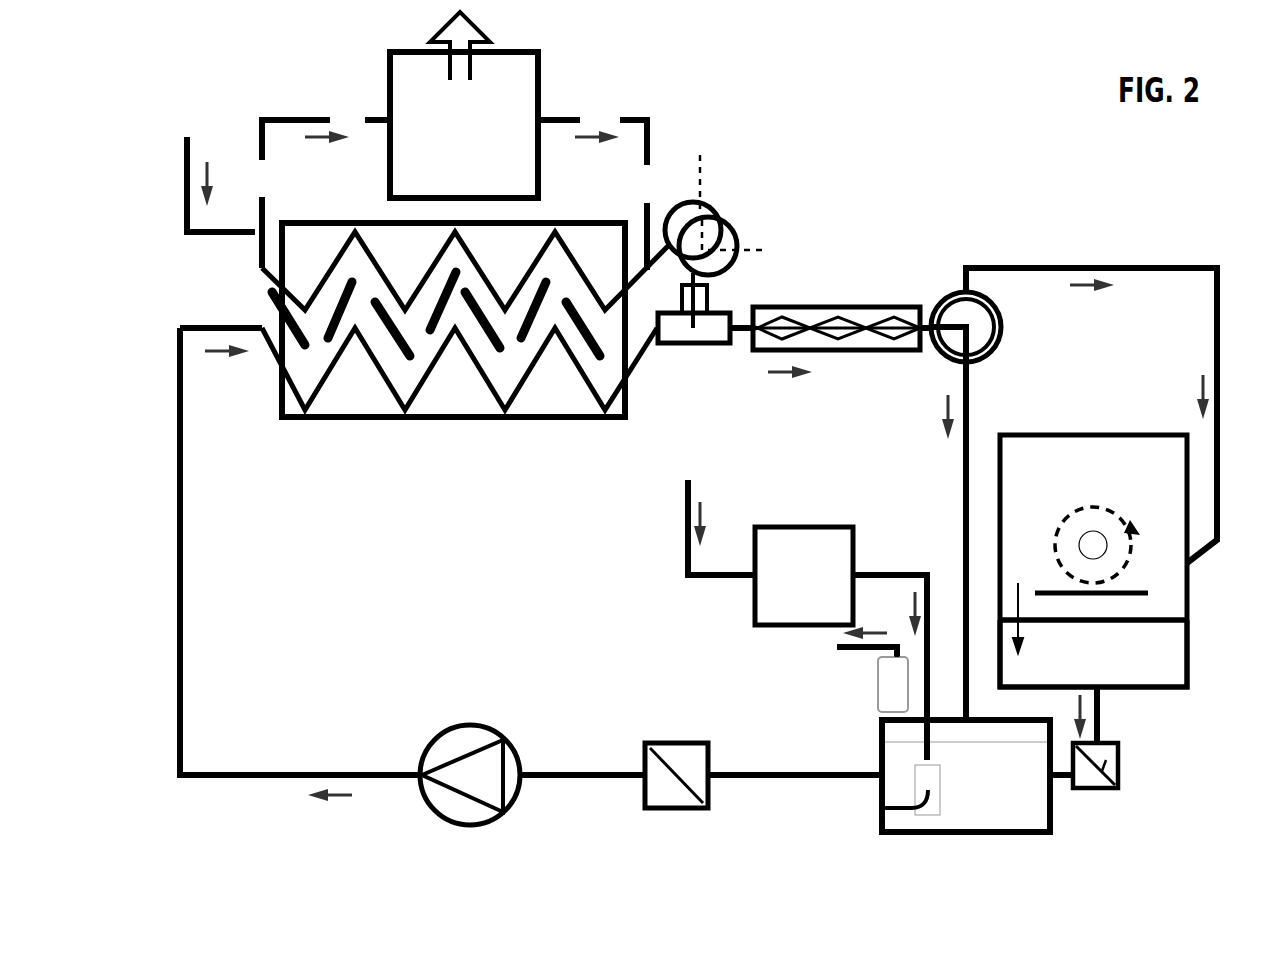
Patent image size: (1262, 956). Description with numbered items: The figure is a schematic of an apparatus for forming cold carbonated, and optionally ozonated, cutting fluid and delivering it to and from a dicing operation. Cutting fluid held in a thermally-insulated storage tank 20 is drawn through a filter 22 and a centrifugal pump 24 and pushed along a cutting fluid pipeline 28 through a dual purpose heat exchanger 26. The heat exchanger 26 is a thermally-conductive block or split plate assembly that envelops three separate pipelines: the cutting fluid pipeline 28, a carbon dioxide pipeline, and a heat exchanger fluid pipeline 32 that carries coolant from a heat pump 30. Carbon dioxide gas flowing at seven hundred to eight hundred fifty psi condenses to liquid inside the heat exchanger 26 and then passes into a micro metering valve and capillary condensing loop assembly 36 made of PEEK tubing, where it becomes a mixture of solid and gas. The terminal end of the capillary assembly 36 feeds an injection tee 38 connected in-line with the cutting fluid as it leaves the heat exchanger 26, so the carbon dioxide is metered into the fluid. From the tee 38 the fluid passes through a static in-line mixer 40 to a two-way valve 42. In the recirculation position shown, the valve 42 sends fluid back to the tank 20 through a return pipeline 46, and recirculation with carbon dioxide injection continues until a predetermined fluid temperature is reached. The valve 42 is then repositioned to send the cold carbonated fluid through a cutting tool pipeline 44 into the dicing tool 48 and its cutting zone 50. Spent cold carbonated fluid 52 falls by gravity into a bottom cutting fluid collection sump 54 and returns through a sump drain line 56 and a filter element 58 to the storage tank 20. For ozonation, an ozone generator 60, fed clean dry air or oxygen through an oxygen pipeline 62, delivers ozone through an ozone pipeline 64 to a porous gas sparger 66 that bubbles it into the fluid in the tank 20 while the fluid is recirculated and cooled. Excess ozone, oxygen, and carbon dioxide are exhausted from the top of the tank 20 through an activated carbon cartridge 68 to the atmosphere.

The cutting fluid storage tank 20 is at (1030, 808).
The filter 22 is at (673, 730).
The centrifugal pump 24 is at (470, 743).
The dual purpose heat exchanger 26 is at (462, 405).
The cutting fluid pipeline 28 is at (252, 775).
The heat pump 30 is at (462, 107).
The heat exchanger fluid pipeline 32 is at (653, 133).
The micro metering valve and capillary condensing loop assembly 36 is at (727, 237).
The injection tee 38 is at (720, 343).
The static in-line mixer 40 is at (843, 307).
The 2-way valve 42 is at (997, 330).
The cutting tool pipeline 44 is at (1037, 268).
The return pipeline 46 is at (965, 397).
The dicing tool 48 is at (1080, 437).
The cutting zone 50 is at (1135, 585).
The spent cold carbonated fluid 52 is at (1022, 650).
The cutting fluid collection sump 54 is at (1140, 663).
The sump drain line 56 is at (1102, 718).
The filter element 58 is at (1118, 762).
The ozone generator 60 is at (803, 577).
The oxygen pipeline 62 is at (688, 540).
The ozone pipeline 64 is at (870, 575).
The porous gas sparger 66 is at (882, 808).
The activated carbon cartridge 68 is at (892, 683).